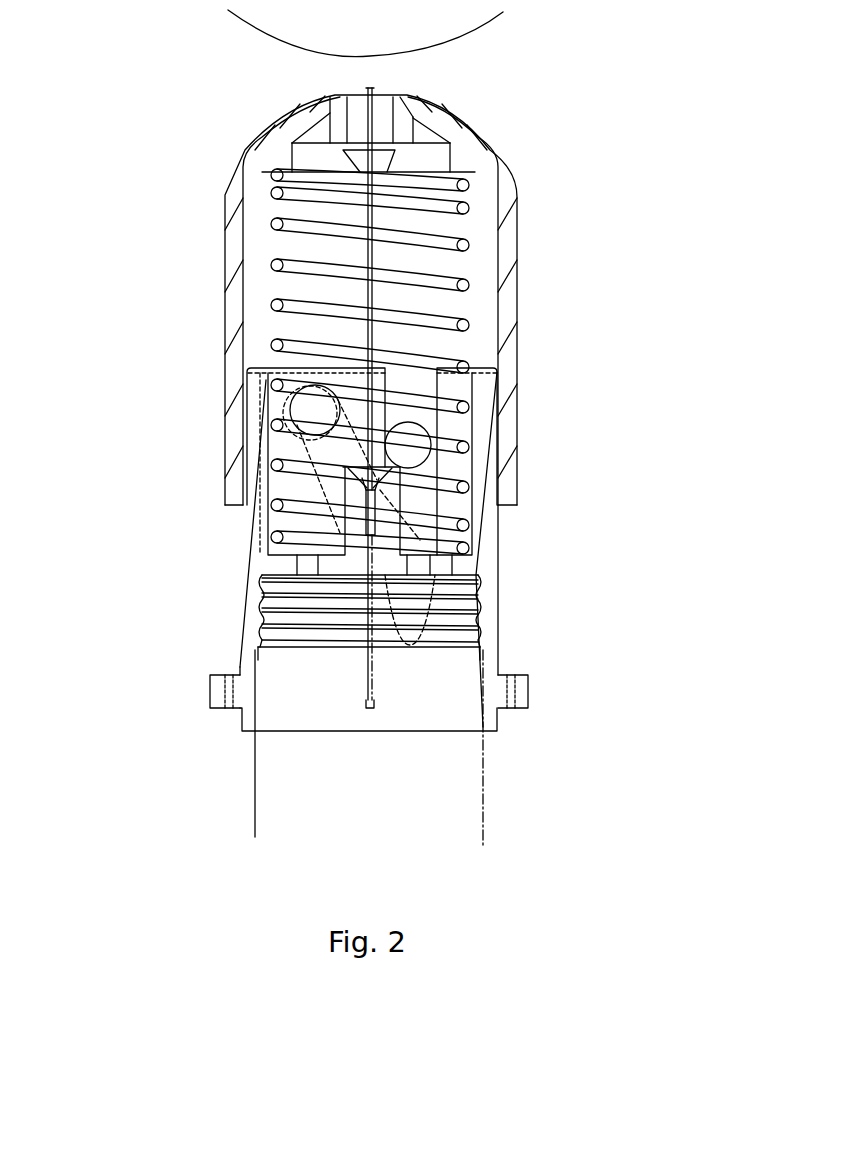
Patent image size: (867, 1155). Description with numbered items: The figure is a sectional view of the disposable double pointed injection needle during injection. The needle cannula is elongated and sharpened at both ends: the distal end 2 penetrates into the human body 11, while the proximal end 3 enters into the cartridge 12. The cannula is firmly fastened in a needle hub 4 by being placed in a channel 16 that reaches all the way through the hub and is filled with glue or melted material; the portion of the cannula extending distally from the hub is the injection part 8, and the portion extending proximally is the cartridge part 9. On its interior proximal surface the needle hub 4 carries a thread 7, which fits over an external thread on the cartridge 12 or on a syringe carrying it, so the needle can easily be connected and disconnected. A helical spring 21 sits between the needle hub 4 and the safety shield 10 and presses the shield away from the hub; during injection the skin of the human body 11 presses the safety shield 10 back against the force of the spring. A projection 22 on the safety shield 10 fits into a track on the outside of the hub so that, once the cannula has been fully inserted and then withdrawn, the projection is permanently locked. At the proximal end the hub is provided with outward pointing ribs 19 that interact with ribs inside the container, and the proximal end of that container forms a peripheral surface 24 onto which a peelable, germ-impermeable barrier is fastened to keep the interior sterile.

The distal end 2 is at (368, 88).
The proximal end 3 is at (368, 706).
The needle hub 4 is at (500, 543).
The thread 7 is at (480, 622).
The injection part 8 is at (447, 361).
The cartridge part 9 is at (372, 647).
The safety shield 10 is at (228, 261).
The human body 11 is at (415, 27).
The cartridge 12 is at (432, 797).
The channel 16 is at (387, 477).
The outward pointing ribs 19 is at (513, 712).
The helical spring 21 is at (455, 237).
The projection 22 is at (433, 432).
The peripheral surface 24 is at (268, 546).